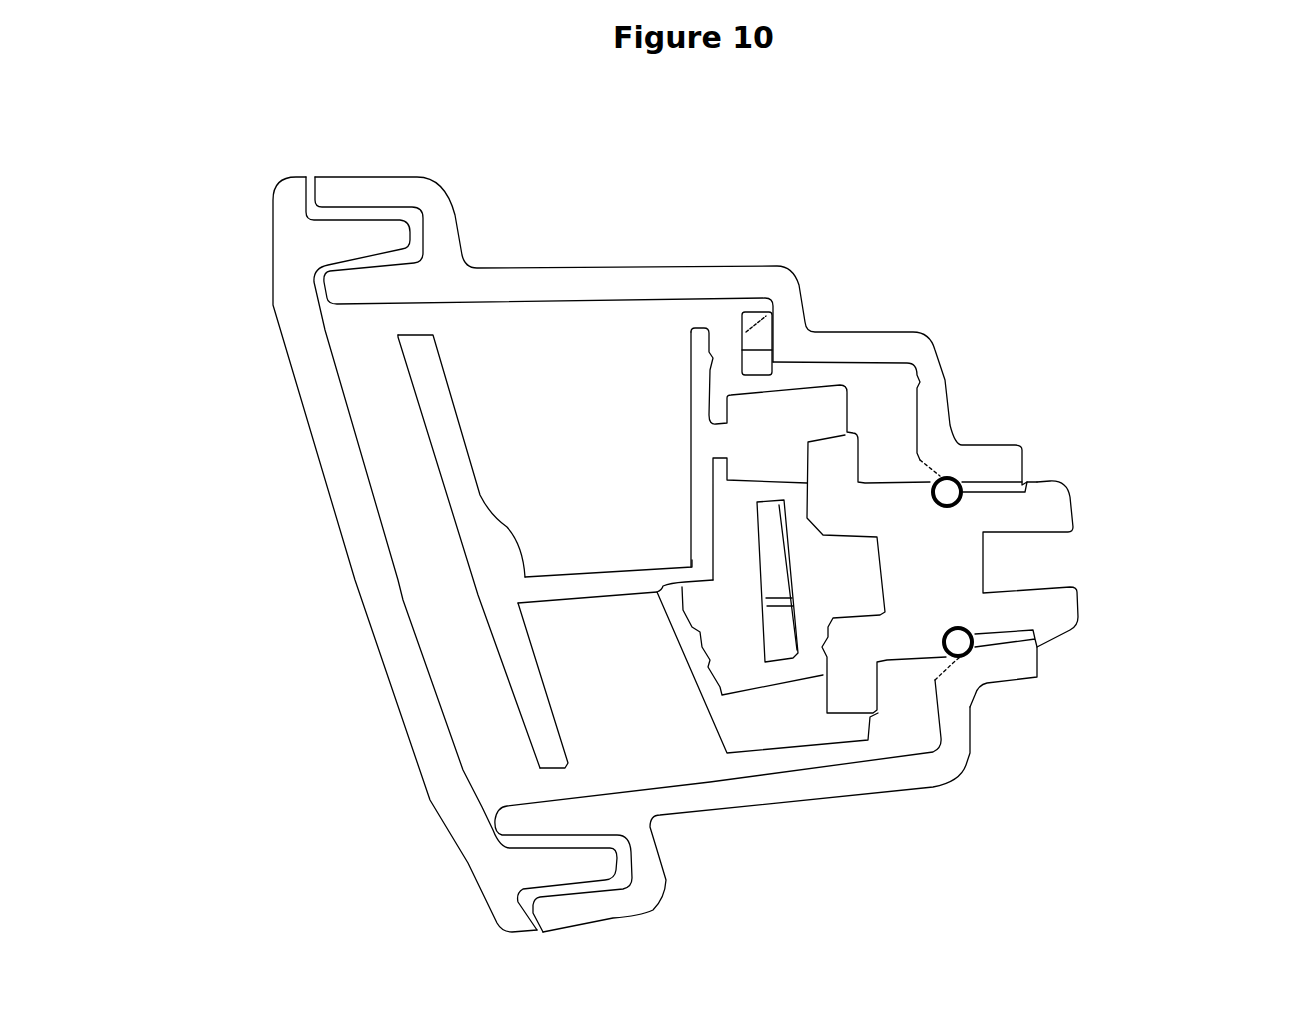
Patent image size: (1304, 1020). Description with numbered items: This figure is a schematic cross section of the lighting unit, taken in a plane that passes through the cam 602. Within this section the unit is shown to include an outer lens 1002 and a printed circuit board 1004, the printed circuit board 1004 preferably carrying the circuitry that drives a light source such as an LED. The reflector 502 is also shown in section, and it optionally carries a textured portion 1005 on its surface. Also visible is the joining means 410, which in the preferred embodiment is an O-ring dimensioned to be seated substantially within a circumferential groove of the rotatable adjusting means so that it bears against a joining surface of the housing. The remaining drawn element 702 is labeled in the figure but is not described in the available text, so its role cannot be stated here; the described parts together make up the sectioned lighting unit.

The outer lens 1002 is at (271, 230).
The housing top rail 702 is at (798, 272).
The reflector 502 is at (438, 339).
The textured portion 1005 is at (475, 596).
The printed circuit board (PCB) 1004 is at (780, 362).
The joining means 410 is at (947, 476).
The cam 602 is at (1059, 491).